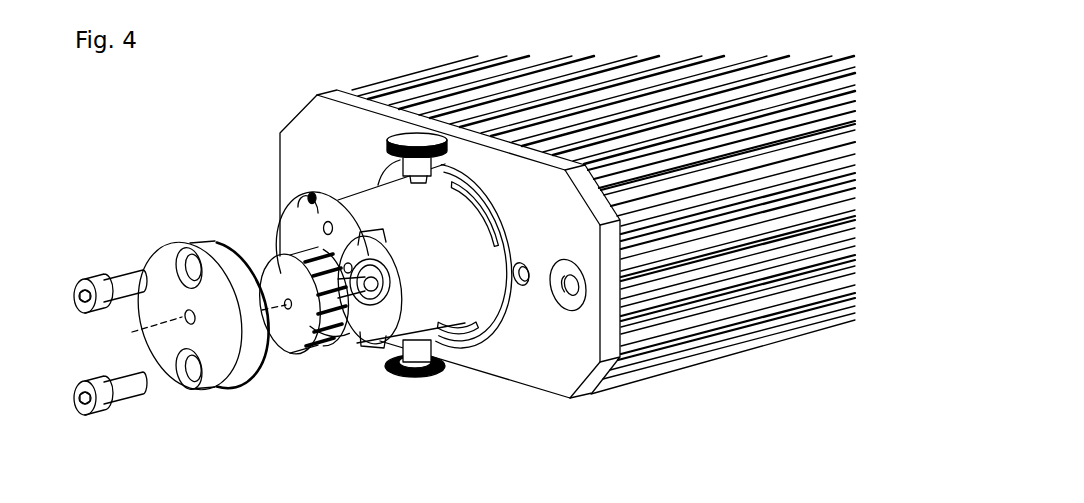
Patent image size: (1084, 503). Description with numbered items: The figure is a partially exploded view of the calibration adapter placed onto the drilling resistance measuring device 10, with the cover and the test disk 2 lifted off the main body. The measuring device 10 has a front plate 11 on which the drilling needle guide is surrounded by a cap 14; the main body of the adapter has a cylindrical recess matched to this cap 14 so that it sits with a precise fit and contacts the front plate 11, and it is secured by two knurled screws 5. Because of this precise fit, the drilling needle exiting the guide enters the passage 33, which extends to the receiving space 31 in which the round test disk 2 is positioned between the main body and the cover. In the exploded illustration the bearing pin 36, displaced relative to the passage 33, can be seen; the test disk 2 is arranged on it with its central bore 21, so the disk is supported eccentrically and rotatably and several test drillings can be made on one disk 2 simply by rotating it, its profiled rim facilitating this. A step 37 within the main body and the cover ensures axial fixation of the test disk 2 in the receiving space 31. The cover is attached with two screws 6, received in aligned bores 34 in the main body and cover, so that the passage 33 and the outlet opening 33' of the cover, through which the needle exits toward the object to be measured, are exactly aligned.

The test disk 2 is at (307, 342).
The knurled screw 5 is at (401, 138).
The screw 6 is at (102, 278).
The drilling resistance measuring device 10 is at (444, 58).
The front plate 11 is at (312, 118).
The cap 14 is at (498, 300).
The central bore 21 is at (287, 300).
The receiving space 31 is at (385, 256).
The passage 33 is at (296, 240).
The outlet opening 33' is at (147, 340).
The bore 34 is at (300, 212).
The bearing pin 36 is at (379, 287).
The step 37 is at (378, 348).